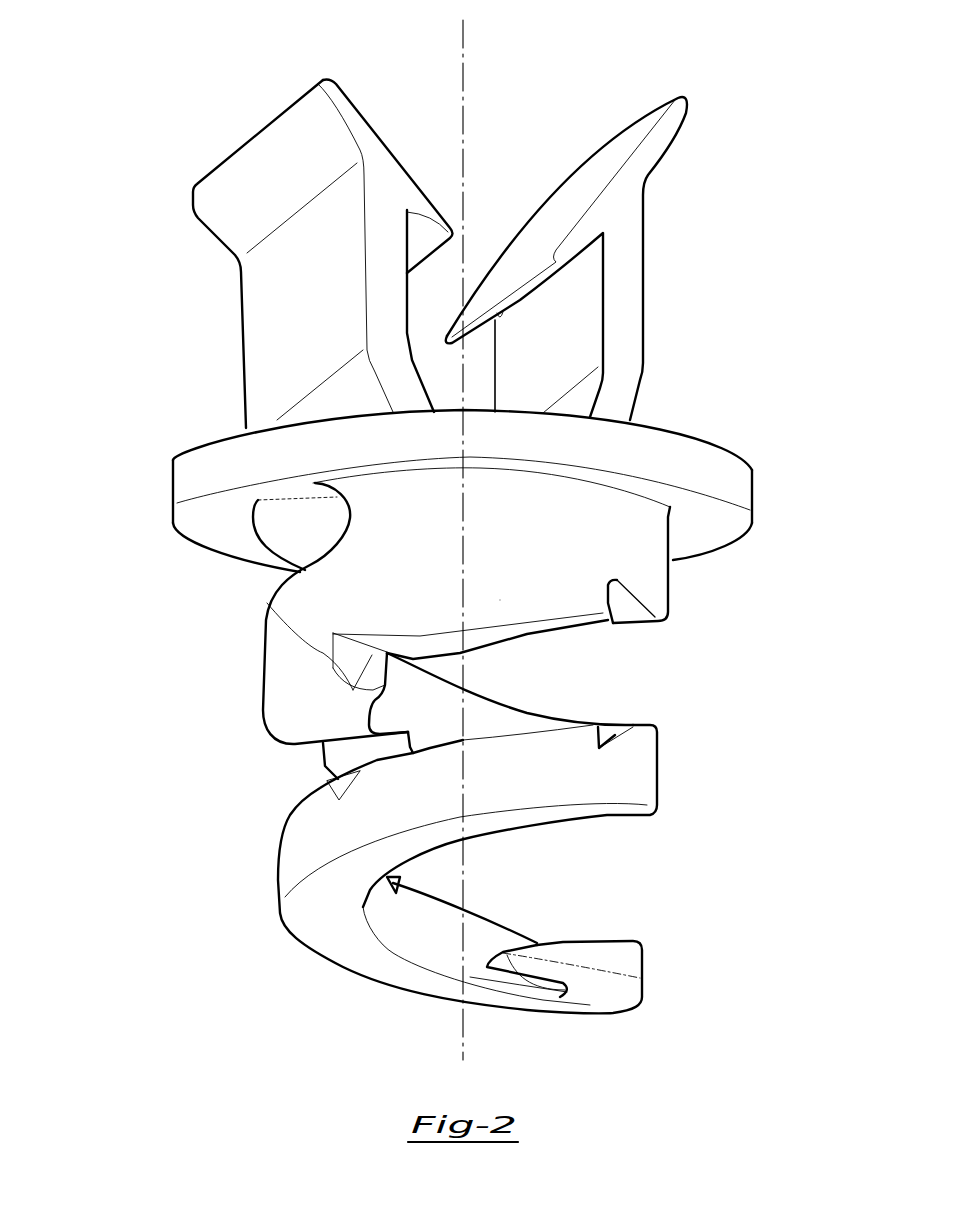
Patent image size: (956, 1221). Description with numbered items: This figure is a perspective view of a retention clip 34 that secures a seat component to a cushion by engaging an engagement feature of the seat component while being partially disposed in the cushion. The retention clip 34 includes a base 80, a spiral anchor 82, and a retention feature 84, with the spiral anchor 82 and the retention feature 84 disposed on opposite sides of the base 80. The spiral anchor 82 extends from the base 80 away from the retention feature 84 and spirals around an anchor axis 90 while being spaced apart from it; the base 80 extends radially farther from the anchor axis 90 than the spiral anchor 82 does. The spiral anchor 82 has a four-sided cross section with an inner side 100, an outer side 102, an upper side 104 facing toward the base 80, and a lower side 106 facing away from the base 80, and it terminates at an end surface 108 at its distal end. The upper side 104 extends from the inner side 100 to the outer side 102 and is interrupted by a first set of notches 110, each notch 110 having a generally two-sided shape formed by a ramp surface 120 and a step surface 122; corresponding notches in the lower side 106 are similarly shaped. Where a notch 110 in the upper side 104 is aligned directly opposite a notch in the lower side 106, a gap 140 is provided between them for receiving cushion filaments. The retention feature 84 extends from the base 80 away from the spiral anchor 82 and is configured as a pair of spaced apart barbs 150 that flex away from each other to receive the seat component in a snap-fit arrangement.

The retention clip 34 is at (434, 547).
The base 80 is at (481, 446).
The spiral anchor 82 is at (434, 748).
The retention feature 84 is at (578, 175).
The anchor axis 90 is at (463, 86).
The inner side 100 is at (510, 748).
The outer side 102 is at (643, 963).
The upper side 104 is at (470, 693).
The lower side 106 is at (643, 830).
The end surface 108 is at (567, 987).
The notch 110 is at (345, 650).
The ramp surface 120 is at (268, 598).
The step surface 122 is at (370, 650).
The gap 140 is at (482, 743).
The barb 150 is at (493, 320).